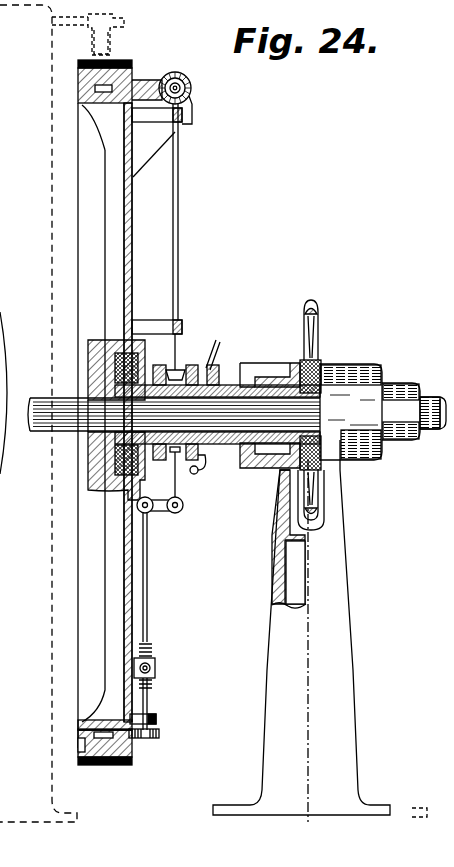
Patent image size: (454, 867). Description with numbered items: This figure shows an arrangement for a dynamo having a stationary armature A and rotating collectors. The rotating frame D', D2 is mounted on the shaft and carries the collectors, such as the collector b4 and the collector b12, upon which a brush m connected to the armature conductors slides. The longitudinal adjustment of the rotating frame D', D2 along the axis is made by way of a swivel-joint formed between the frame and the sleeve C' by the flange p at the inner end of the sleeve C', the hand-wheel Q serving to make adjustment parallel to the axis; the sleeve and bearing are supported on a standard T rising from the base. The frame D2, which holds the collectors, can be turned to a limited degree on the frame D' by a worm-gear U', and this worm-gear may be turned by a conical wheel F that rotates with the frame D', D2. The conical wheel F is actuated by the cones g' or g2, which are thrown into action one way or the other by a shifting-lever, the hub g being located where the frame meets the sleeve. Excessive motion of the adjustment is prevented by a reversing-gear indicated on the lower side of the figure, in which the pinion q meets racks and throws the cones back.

The stationary armature A is at (47, 87).
The rotating frame D' is at (90, 425).
The rotating frame D2 is at (85, 86).
The collector b4 is at (115, 61).
The brush m is at (105, 59).
The worm-gear U' is at (180, 195).
The hub of wheel g is at (83, 407).
The flange p is at (118, 366).
The sleeve C' is at (174, 444).
The cone g' is at (186, 404).
The cone g2 is at (196, 364).
The conical wheel F is at (225, 342).
The hand-wheel Q is at (313, 330).
The standard T is at (329, 593).
The pinion q is at (155, 735).
The collector b12 is at (110, 767).